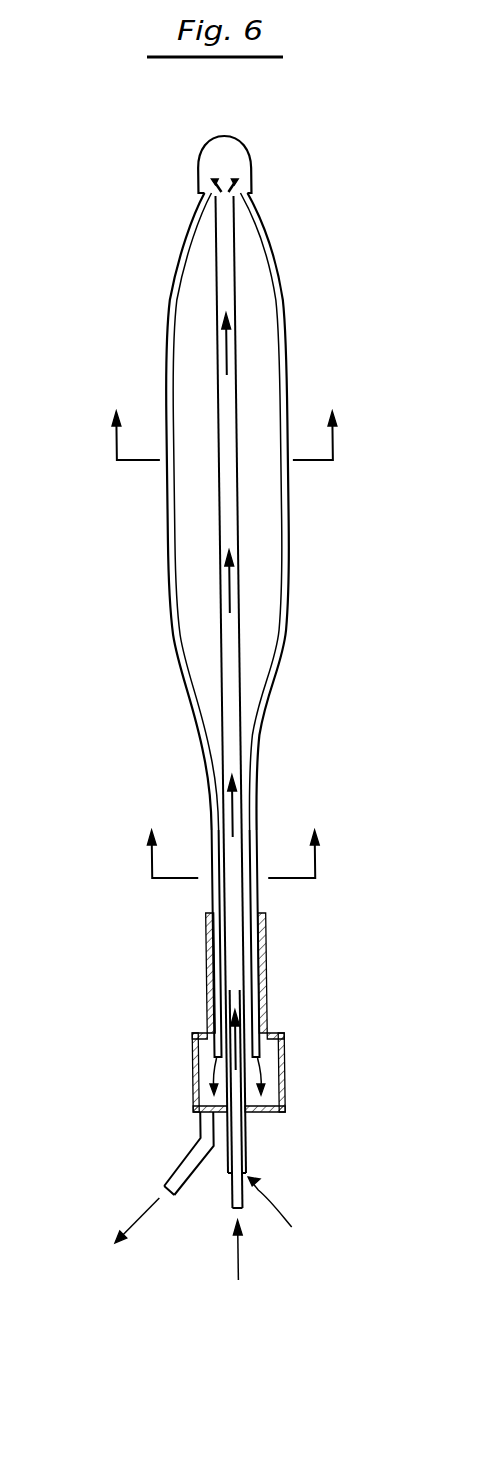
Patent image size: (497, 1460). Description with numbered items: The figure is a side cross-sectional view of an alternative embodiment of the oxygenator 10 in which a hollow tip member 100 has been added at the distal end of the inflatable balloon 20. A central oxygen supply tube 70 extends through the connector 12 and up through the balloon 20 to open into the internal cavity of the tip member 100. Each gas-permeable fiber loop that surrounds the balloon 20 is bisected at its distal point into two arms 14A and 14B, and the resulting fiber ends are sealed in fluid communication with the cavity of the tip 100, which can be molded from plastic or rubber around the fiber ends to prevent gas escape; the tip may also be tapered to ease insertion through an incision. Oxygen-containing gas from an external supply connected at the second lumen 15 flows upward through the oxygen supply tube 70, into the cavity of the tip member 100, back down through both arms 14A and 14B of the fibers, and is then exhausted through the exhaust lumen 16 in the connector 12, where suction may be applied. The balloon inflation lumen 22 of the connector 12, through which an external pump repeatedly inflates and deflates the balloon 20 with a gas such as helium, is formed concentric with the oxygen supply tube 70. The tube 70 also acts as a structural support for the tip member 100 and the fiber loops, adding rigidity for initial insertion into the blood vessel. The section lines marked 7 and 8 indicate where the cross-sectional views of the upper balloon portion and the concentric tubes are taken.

The oxygenator 10 is at (231, 714).
The hollow tip member 100 is at (233, 158).
The first arm of fiber loop 14A is at (172, 270).
The second arm of fiber loop 14B is at (276, 314).
The inflatable balloon 20 is at (248, 283).
The central oxygen supply tube 70 is at (224, 257).
The balloon inflation lumen 22 is at (233, 851).
The connector 12 is at (271, 1040).
The third lumen (exhaust lumen) 16 is at (168, 1162).
The second lumen 15 is at (215, 1197).
The section line 7- 7 is at (222, 452).
The section line 8- 8 is at (234, 871).